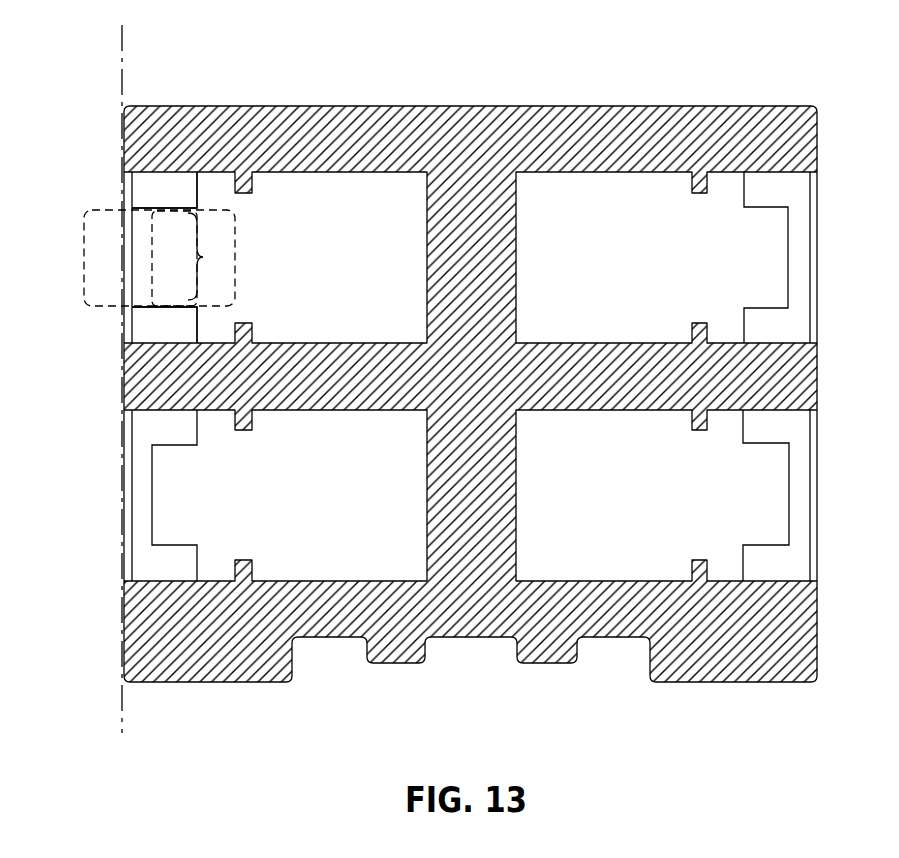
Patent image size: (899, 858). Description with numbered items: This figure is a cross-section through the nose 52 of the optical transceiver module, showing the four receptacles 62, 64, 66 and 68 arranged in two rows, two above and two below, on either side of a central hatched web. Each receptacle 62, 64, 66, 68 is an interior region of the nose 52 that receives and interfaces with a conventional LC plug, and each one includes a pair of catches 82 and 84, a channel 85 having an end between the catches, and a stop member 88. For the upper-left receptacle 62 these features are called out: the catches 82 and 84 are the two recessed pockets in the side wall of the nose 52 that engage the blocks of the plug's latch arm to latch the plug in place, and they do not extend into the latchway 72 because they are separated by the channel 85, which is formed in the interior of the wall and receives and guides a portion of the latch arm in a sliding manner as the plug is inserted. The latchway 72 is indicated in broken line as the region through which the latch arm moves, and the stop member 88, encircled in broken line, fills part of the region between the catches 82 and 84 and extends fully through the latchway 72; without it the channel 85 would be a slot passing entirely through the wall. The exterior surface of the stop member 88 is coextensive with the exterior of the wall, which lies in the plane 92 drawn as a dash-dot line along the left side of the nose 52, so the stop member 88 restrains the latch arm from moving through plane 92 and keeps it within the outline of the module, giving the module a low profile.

The nose 52 is at (465, 106).
The receptacle 62 is at (329, 268).
The receptacle 64 is at (254, 509).
The receptacle 66 is at (694, 264).
The receptacle 68 is at (693, 508).
The latchway 72 is at (85, 237).
The catch 82 is at (188, 188).
The catch 84 is at (188, 323).
The channel 85 is at (210, 256).
The stop member 88 is at (122, 283).
The plane 92 is at (122, 85).